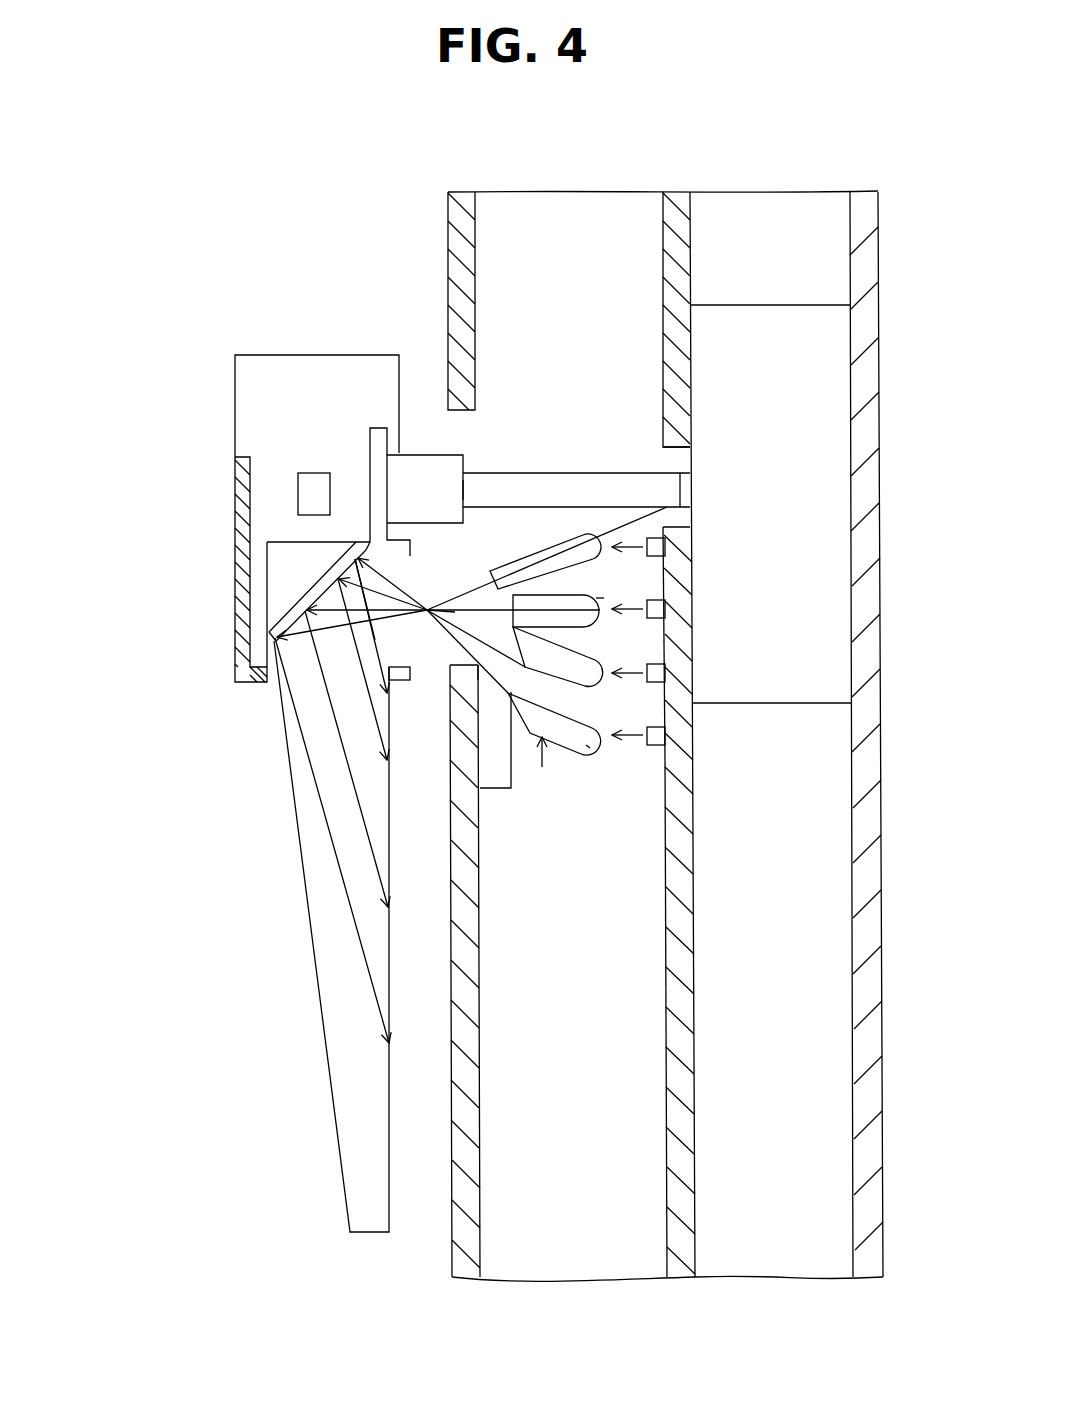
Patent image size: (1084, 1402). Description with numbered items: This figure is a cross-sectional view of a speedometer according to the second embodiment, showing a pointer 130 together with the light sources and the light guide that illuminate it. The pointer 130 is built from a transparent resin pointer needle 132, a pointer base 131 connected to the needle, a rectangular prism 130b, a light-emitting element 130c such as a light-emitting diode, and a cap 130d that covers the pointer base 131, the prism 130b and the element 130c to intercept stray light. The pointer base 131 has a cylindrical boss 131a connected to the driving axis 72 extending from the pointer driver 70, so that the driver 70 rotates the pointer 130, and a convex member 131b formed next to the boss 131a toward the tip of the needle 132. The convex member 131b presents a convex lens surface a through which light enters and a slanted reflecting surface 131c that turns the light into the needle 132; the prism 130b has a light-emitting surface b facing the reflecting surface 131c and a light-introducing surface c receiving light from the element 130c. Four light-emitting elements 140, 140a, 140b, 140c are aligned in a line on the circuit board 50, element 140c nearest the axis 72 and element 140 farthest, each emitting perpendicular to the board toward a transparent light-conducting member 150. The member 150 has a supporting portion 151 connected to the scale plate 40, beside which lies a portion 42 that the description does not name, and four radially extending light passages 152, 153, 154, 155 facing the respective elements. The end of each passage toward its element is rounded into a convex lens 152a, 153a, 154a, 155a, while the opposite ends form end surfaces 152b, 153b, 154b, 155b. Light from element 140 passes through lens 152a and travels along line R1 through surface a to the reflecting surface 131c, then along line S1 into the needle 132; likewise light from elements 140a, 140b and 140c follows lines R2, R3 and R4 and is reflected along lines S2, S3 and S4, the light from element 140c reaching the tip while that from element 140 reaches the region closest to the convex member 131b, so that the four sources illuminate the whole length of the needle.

The scale plate 40 is at (483, 1108).
The housing wall portion 42 is at (445, 412).
The circuit board 50 is at (694, 281).
The pointer driver 70 is at (807, 320).
The driving axis 72 is at (652, 445).
The pointer 130 is at (203, 554).
The rectangular prism 130b is at (275, 571).
The light-emitting element 130c is at (340, 480).
The cap 130d is at (257, 355).
The pointer base 131 is at (250, 460).
The cylindrical boss 131a is at (432, 455).
The convex member 131b is at (407, 553).
The slanted reflecting surface 131c is at (330, 604).
The pointer needle 132 is at (340, 1080).
The light-emitting element 140 is at (670, 736).
The light-emitting element 140a is at (658, 673).
The light-emitting element 140b is at (658, 609).
The light-emitting element 140c is at (658, 547).
The light-conducting member 150 is at (523, 747).
The supporting portion 151 is at (497, 745).
The light passage 152 is at (557, 745).
The convex lens 152a is at (590, 743).
The end surface 152b is at (478, 687).
The light passage 153 is at (578, 750).
The convex lens 153a is at (615, 688).
The end surface 153b is at (406, 682).
The light passage 154 is at (556, 562).
The convex lens 154a is at (603, 598).
The end surface 154b is at (477, 653).
The light passage 155 is at (555, 472).
The convex lens 155a is at (670, 507).
The end surface 155b is at (491, 568).
The line R1 is at (515, 748).
The line R2 is at (572, 755).
The line R3 is at (550, 608).
The line R4 is at (528, 558).
The line S1 is at (375, 714).
The line S2 is at (380, 735).
The line S3 is at (372, 852).
The line S4 is at (355, 922).
The convex lens surface a is at (365, 655).
The light-emitting surface b is at (335, 572).
The light-introducing surface c is at (398, 383).